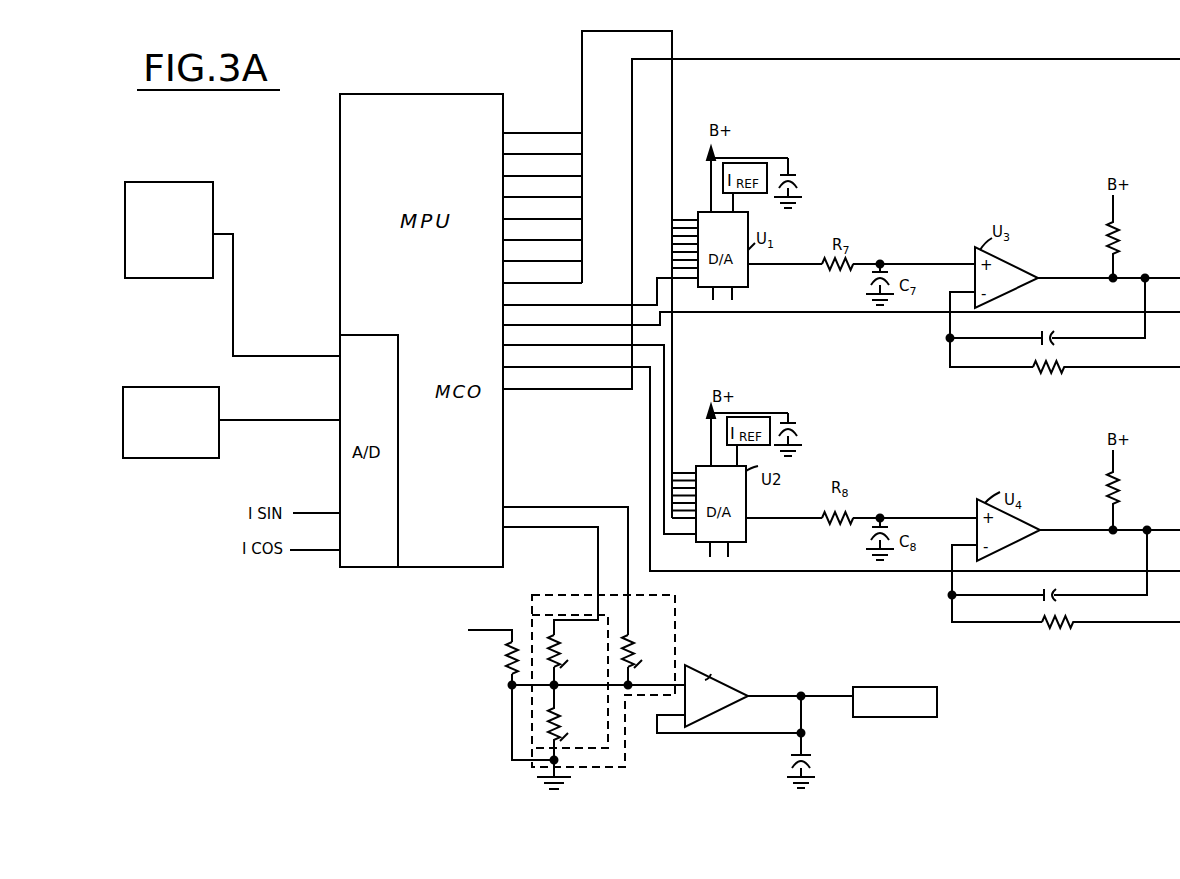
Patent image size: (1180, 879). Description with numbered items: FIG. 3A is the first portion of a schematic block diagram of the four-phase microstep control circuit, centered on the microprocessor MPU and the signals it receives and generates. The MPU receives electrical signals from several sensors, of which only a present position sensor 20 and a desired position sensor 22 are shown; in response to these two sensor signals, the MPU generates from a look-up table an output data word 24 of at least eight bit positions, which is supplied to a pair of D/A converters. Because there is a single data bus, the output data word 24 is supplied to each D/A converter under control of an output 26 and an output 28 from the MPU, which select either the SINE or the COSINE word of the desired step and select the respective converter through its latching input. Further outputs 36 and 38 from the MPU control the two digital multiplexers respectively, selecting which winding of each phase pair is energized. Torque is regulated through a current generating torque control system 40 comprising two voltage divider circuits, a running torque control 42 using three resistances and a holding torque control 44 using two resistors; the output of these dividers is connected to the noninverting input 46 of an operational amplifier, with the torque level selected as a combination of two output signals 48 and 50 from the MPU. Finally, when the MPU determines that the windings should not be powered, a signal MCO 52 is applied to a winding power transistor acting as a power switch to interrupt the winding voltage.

The present position sensor 20 is at (178, 387).
The desired position sensor 22 is at (197, 182).
The output data word 24 is at (585, 133).
The output 26 is at (577, 305).
The output 28 is at (568, 333).
The output 36 is at (548, 312).
The output 38 is at (558, 368).
The current generating torque control system 40 is at (470, 710).
The running torque control 42 is at (680, 603).
The holding torque control 44 is at (608, 748).
The noninverting input 46 is at (683, 667).
The output signal 48 is at (545, 507).
The output signal 50 is at (577, 528).
The signal MCO 52 is at (888, 59).